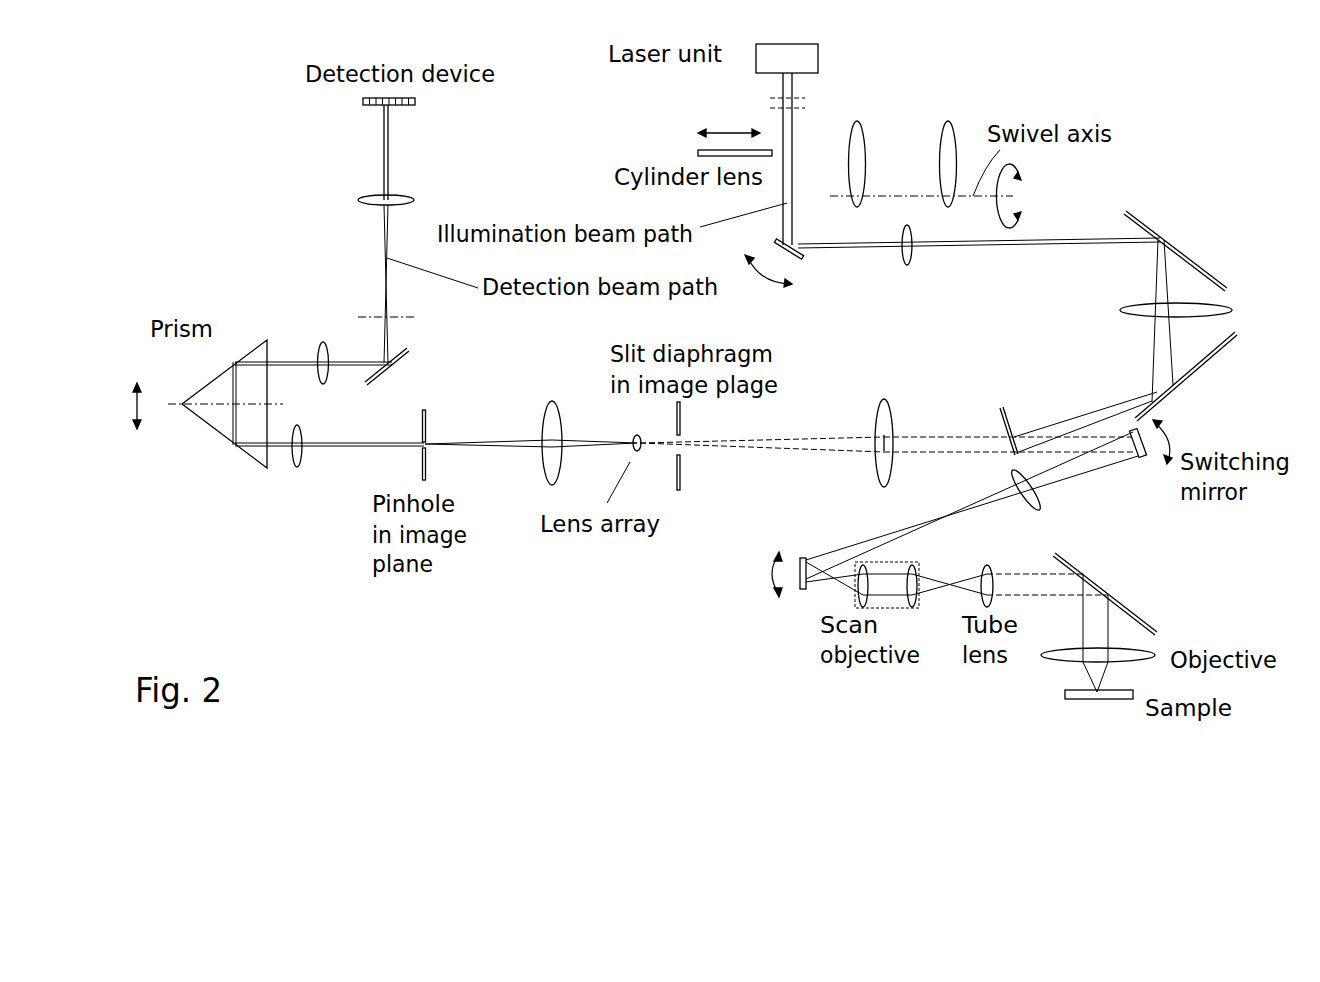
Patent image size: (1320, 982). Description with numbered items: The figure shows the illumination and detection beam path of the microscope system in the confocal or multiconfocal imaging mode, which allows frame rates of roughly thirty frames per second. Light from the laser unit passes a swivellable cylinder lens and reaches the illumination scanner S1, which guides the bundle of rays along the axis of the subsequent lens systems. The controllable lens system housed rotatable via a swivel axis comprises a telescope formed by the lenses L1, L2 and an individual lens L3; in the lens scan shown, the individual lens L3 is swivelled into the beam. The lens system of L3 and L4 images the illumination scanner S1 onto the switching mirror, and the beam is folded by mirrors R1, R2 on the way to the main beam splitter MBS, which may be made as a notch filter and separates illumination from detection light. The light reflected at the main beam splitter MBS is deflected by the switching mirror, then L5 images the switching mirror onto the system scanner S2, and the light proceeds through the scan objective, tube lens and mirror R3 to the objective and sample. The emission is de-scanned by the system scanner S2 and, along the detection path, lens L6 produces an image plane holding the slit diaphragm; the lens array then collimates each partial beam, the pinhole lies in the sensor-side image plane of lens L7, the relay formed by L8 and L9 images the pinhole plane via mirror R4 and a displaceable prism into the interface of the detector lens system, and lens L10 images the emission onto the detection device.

The lens L1 is at (852, 143).
The lens L2 is at (943, 147).
The individual lens L3 is at (900, 261).
The lens L4 is at (1153, 310).
The lens L5 is at (1044, 500).
The lens L6 is at (878, 429).
The lens L7 is at (547, 427).
The lens L8 is at (295, 466).
The lens L9 is at (313, 346).
The lens L10 is at (356, 202).
The mirror R1 is at (1184, 251).
The mirror R2 is at (1197, 376).
The mirror R3 is at (1112, 594).
The mirror R4 is at (404, 368).
The illumination scanner S1 is at (777, 274).
The system scanner S2 is at (766, 574).
The main beam splitter MBS is at (993, 418).